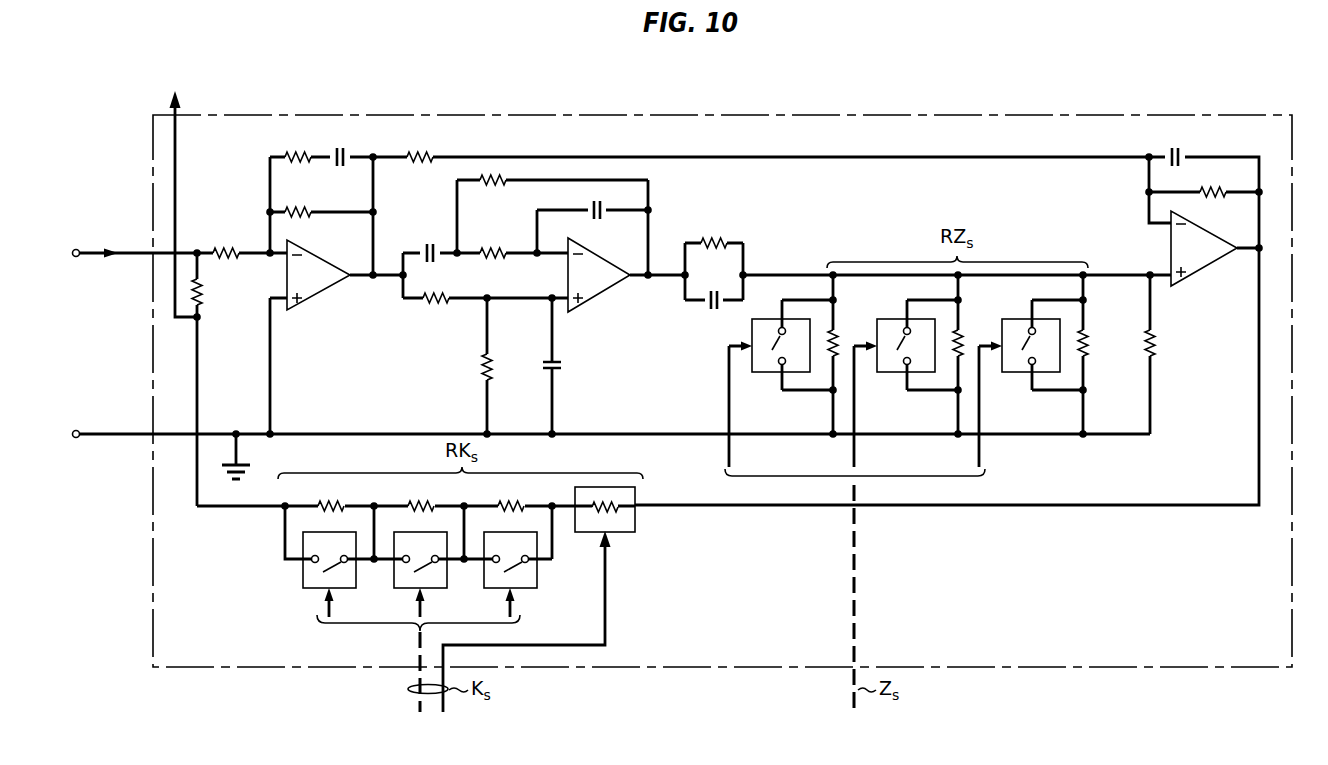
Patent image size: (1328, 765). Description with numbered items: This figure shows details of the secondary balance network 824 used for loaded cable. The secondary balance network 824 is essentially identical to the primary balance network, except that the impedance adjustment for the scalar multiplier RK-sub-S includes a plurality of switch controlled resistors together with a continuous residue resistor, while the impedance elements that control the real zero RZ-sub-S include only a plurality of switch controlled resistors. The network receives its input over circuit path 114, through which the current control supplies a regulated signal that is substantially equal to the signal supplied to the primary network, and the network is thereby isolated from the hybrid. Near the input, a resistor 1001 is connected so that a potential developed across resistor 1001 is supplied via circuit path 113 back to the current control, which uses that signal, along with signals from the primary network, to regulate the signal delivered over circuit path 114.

The circuit path 113 is at (173, 107).
The circuit path 114 is at (94, 251).
The resistor 1001 is at (205, 291).
The secondary balance network 824 is at (1077, 113).